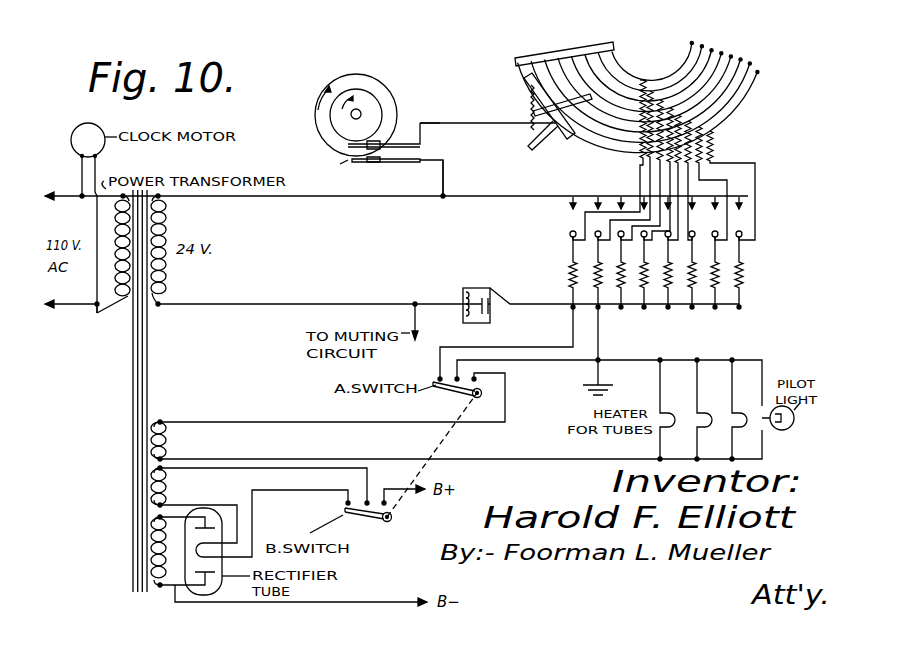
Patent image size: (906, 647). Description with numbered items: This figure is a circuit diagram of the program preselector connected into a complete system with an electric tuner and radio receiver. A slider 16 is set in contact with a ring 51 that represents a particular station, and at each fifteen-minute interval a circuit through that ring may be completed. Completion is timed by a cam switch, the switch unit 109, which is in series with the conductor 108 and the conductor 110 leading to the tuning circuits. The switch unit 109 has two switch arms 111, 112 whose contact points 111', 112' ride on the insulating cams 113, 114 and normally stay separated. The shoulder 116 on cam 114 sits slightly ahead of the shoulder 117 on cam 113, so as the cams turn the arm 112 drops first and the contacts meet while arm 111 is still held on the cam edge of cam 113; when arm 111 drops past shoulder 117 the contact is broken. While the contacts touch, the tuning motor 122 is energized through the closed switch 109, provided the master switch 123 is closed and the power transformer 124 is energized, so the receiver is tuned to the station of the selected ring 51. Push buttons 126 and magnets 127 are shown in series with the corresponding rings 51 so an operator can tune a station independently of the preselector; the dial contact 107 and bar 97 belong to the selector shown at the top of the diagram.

The slider 16 is at (534, 152).
The ring 51 is at (746, 100).
The contact bar 97 is at (571, 138).
The dial contact 107 is at (641, 80).
The conductor 108 is at (640, 180).
The switch unit 109 is at (435, 110).
The switch lead 110 is at (473, 167).
The switch arm 111 is at (396, 120).
The contact point 111' is at (403, 109).
The switch arm 112 is at (398, 178).
The contact point 112' is at (355, 176).
The insulating cam 113 is at (337, 118).
The insulating cam 114 is at (334, 146).
The shoulder 116 is at (341, 161).
The shoulder 117 is at (333, 143).
The tuning motor 122 is at (466, 292).
The master switch 123 is at (96, 309).
The power transformer 124 is at (166, 279).
The push buttons 126 is at (745, 202).
The magnets 127 is at (745, 275).